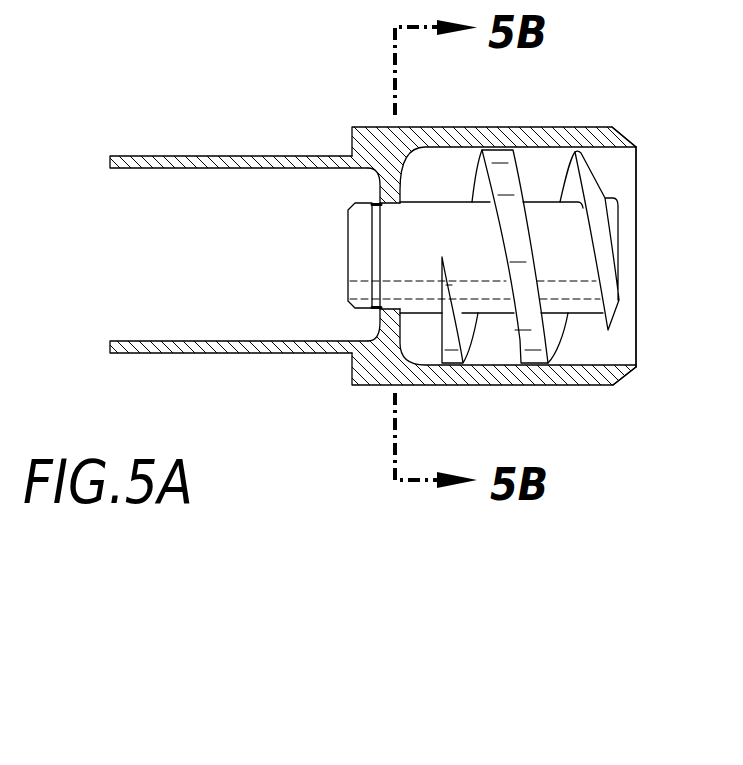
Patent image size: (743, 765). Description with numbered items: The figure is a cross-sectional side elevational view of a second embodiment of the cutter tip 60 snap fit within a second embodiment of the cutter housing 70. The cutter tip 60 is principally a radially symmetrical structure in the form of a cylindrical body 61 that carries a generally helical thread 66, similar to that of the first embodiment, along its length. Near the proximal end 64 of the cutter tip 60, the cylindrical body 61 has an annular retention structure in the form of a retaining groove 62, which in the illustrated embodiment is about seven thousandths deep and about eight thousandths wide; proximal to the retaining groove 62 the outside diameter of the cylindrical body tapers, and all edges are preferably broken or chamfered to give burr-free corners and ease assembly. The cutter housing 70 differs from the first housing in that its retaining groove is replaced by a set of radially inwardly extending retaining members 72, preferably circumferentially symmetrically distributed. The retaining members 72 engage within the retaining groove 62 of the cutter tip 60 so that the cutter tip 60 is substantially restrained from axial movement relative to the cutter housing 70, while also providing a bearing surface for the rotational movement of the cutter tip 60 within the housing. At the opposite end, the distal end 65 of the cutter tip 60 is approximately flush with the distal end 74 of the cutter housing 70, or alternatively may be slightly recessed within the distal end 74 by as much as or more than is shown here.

The cutter tip 60 is at (634, 257).
The cylindrical body 61 is at (417, 218).
The retaining groove 62 is at (385, 257).
The proximal end 64 is at (318, 207).
The distal end 65 is at (612, 183).
The helical thread 66 is at (508, 178).
The cutter housing 70 is at (578, 386).
The retaining members 72 is at (387, 320).
The distal end 74 is at (636, 335).